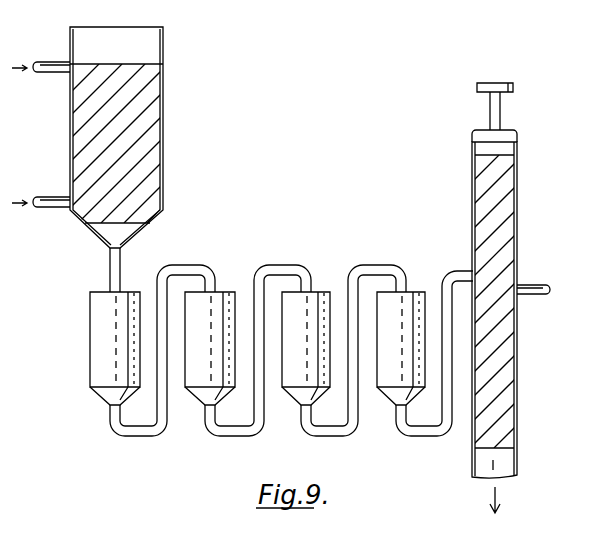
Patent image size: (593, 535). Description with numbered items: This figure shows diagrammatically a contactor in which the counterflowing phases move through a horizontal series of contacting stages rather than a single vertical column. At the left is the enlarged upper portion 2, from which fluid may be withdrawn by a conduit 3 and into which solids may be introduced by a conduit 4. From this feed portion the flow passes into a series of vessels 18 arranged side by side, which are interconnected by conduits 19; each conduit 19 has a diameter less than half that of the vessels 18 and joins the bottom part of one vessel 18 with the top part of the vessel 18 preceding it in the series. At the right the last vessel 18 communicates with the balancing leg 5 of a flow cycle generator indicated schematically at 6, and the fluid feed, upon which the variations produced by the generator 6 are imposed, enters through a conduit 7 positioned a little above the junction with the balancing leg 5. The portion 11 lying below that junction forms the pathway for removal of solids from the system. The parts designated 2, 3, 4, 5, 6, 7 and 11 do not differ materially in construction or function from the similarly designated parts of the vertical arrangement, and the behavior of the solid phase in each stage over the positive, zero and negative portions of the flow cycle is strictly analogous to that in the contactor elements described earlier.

The enlarged upper portion 2 is at (147, 125).
The conduit 3 is at (57, 62).
The conduit 4 is at (60, 208).
The balancing leg 5 is at (509, 182).
The flow cycle generator 6 is at (514, 90).
The conduit 7 is at (535, 285).
The portion 11 is at (498, 407).
The vessels 18 is at (92, 318).
The conduits 19 is at (166, 410).